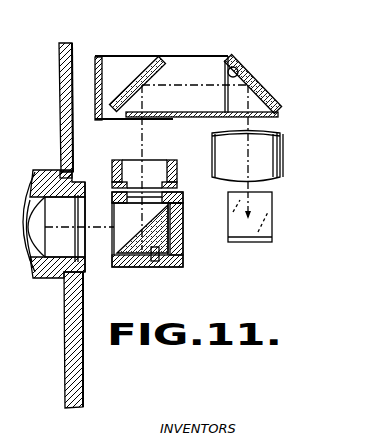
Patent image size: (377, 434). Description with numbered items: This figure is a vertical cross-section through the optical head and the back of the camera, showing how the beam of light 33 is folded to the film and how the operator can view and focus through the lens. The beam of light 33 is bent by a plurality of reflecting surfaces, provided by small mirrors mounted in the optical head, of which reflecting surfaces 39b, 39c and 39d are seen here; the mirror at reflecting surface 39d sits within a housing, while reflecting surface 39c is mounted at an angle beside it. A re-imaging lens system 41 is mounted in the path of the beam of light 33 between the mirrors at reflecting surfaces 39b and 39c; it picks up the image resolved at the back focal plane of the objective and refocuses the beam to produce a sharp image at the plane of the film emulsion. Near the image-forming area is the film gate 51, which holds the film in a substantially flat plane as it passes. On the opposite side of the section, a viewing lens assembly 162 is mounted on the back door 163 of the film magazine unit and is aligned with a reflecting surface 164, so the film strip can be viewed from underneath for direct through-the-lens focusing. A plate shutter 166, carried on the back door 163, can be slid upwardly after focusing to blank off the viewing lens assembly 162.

The beam of light 33 is at (141, 133).
The reflecting surface 39b is at (255, 243).
The reflecting surface 39c is at (237, 68).
The reflecting surface 39d is at (166, 72).
The re-imaging lens system 41 is at (213, 147).
The film gate 51 is at (188, 186).
The viewing lens assembly 162 is at (37, 200).
The back door 163 is at (59, 81).
The reflecting surface 164 is at (128, 234).
The plate shutter 166 is at (83, 392).